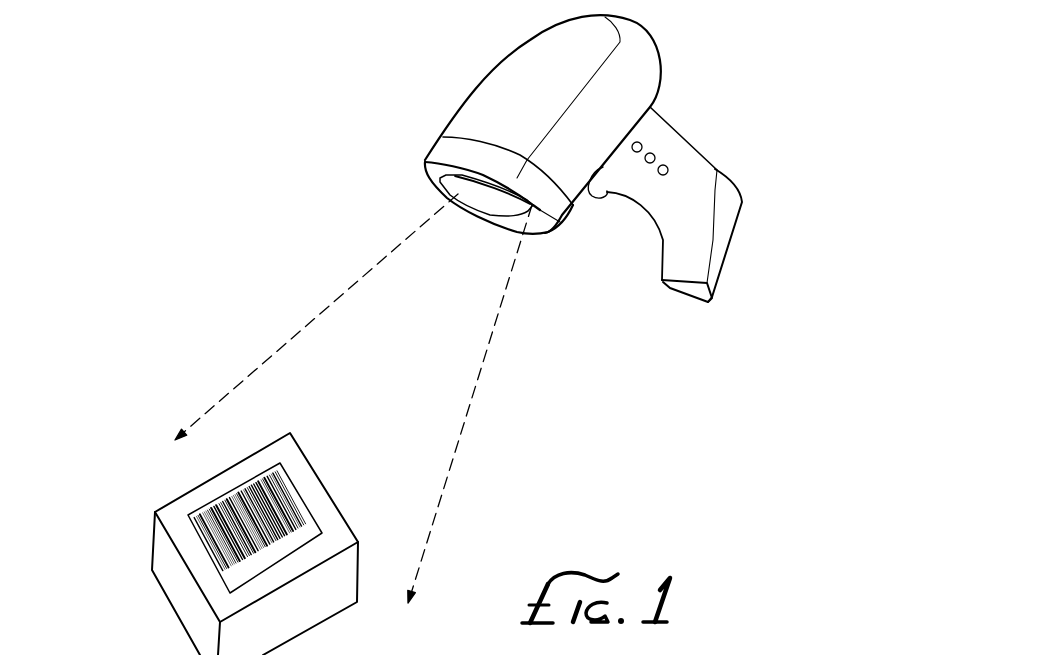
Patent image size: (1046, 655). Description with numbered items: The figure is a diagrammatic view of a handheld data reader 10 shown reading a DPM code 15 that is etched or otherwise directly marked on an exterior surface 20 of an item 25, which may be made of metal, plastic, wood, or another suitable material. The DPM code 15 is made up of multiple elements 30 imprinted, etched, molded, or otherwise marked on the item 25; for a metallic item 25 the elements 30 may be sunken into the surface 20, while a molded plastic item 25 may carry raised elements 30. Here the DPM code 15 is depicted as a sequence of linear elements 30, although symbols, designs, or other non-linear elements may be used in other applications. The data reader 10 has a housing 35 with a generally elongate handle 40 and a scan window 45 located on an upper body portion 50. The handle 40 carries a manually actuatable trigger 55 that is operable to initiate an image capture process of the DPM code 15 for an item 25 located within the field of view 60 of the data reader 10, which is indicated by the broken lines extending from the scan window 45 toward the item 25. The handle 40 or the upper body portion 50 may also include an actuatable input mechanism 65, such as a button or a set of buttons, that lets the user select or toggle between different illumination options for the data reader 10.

The data reader 10 is at (440, 93).
The DPM code 15 is at (193, 494).
The exterior surface 20 is at (225, 482).
The item 25 is at (125, 518).
The elements 30 is at (273, 503).
The housing 35 is at (510, 80).
The handle 40 is at (704, 178).
The scan window 45 is at (513, 200).
The upper body portion 50 is at (657, 47).
The trigger 55 is at (601, 181).
The field of view 60 is at (443, 370).
The actuatable input mechanism 65 is at (668, 135).